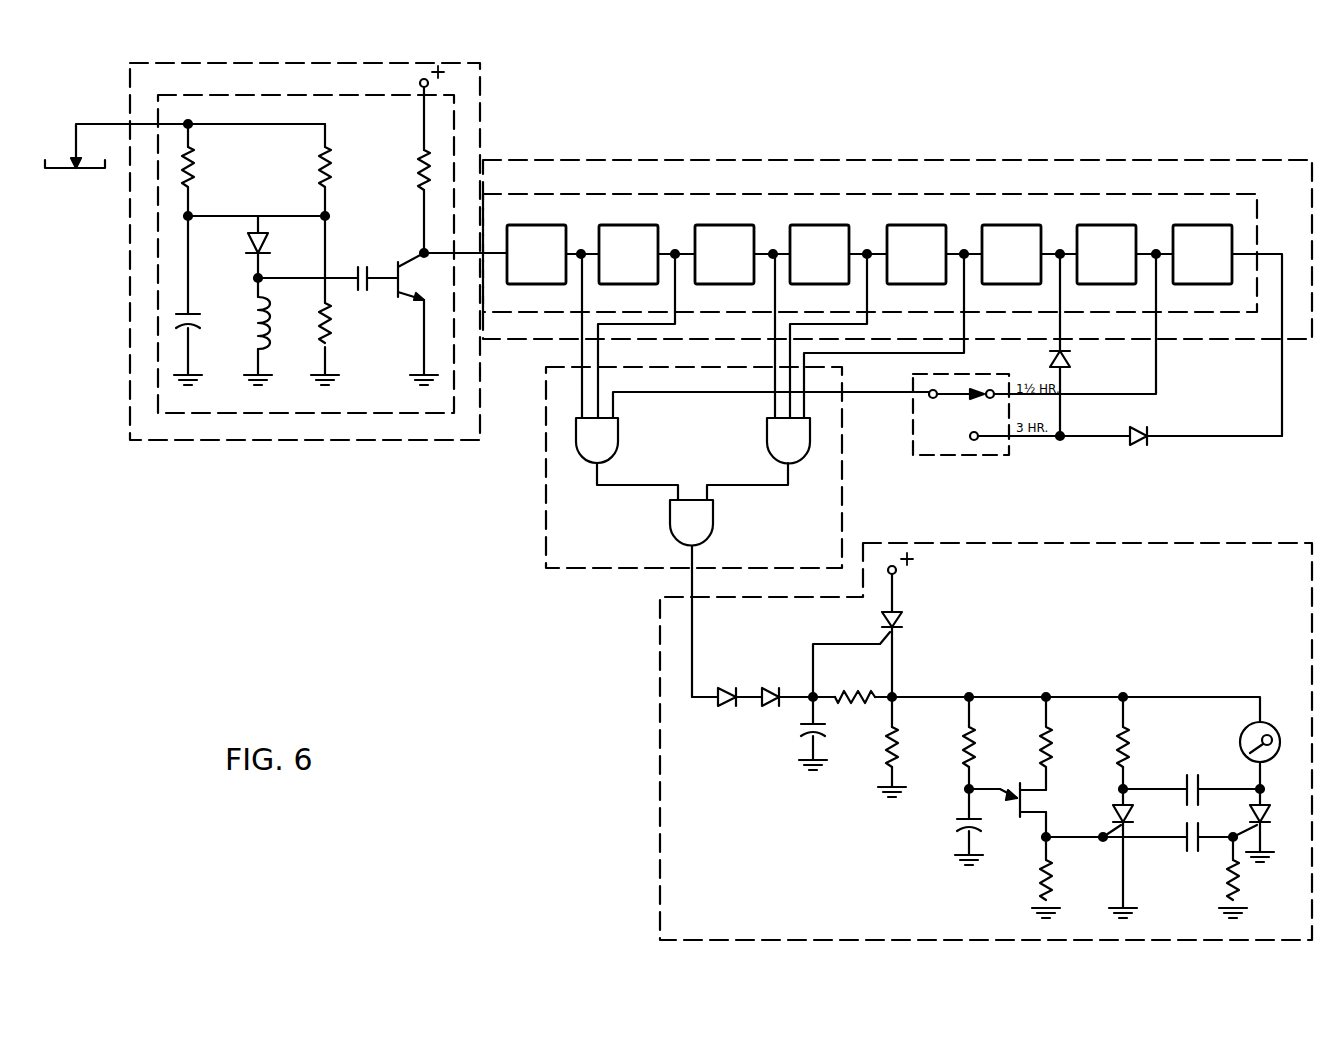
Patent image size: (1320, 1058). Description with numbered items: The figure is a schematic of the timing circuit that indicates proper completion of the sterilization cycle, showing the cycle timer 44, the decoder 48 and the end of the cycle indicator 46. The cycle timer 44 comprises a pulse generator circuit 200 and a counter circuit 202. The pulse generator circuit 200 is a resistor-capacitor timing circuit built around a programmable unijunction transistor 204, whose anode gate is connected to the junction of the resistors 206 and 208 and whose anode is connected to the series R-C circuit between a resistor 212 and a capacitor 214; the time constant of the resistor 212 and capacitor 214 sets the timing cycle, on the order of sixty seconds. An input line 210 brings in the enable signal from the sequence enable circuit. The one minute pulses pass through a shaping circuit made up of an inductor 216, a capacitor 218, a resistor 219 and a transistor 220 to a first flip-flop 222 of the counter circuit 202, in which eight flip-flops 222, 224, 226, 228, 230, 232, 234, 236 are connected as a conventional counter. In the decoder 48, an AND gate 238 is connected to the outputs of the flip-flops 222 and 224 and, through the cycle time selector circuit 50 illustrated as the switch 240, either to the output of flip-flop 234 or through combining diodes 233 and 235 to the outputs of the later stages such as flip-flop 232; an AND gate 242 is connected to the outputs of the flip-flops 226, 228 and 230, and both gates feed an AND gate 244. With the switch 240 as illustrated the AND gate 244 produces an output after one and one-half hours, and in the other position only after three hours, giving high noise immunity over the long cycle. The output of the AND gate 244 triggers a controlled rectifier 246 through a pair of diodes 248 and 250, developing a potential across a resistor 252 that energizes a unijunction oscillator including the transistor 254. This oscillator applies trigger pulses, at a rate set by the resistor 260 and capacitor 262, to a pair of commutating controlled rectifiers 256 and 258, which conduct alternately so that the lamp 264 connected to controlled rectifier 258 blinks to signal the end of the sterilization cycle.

The cycle timer 44 is at (664, 158).
The end of the cycle indicator 46 is at (1086, 543).
The decoder 48 is at (842, 474).
The cycle time selector circuit 50 is at (974, 455).
The pulse generator circuit 200 is at (258, 415).
The counter circuit 202 is at (898, 192).
The programmable unijunction transistor 204 is at (258, 234).
The resistor 206 is at (330, 154).
The resistor 208 is at (336, 341).
The input line from sequence enable circuit 210 is at (95, 120).
The resistor 212 is at (197, 158).
The capacitor 214 is at (196, 323).
The inductor 216 is at (263, 322).
The capacitor 218 is at (360, 267).
The resistor 219 is at (417, 182).
The transistor 220 is at (397, 296).
The first flip-flop 222 is at (531, 224).
The flip-flop 224 is at (623, 224).
The flip-flop 226 is at (721, 224).
The flip-flop 228 is at (816, 224).
The flip-flop 230 is at (913, 224).
The flip-flop 232 is at (1008, 224).
The combining diode 233 is at (1072, 361).
The flip-flop 234 is at (1103, 224).
The combining diode 235 is at (1136, 446).
The flip-flop 236 is at (1198, 224).
The AND gate 238 is at (622, 440).
The switch 240 is at (946, 399).
The AND gate 242 is at (766, 440).
The AND gate 244 is at (718, 515).
The controlled rectifier 246 is at (904, 620).
The diode 248 is at (730, 688).
The diode 250 is at (768, 707).
The resistor 252 is at (904, 744).
The transistor 254 is at (1016, 785).
The commutating controlled rectifier 256 is at (1108, 806).
The commutating controlled rectifier 258 is at (1270, 806).
The resistor 260 is at (974, 741).
The capacitor 262 is at (947, 832).
The lamp 264 is at (1263, 722).